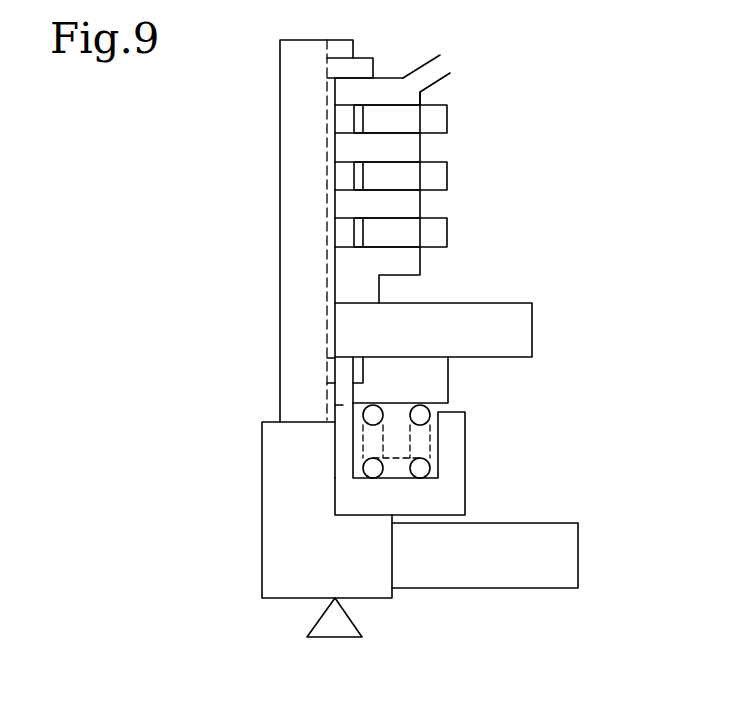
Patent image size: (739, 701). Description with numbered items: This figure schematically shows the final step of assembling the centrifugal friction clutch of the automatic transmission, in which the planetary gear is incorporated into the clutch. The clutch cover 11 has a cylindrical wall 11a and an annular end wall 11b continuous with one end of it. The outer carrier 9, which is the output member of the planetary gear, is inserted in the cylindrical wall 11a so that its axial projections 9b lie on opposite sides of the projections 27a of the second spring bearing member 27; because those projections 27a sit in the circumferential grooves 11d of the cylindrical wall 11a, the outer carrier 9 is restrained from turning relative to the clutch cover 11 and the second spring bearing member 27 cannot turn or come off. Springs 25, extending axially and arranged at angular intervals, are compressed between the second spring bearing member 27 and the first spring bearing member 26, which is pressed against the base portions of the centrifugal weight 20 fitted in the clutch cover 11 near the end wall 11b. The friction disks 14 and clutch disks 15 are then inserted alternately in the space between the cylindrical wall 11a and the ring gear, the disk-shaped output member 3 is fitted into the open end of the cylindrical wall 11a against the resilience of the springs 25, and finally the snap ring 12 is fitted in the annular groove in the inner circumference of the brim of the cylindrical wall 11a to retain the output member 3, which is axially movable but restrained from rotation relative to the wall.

The output member 3 is at (400, 77).
The outer carrier 9 is at (532, 332).
The axial projections 9b is at (343, 407).
The clutch cover 11 is at (259, 225).
The cylindrical wall 11a is at (280, 103).
The annular end wall 11b is at (507, 590).
The circumferential groove 11d is at (323, 358).
The snap ring 12 is at (363, 58).
The friction disks 14 is at (448, 230).
The clutch disks 15 is at (347, 203).
The centrifugal weight 20 is at (248, 549).
The springs 25 is at (430, 443).
The first spring bearing member 26 is at (465, 485).
The second spring bearing member 27 is at (448, 383).
The projections 27a is at (330, 390).